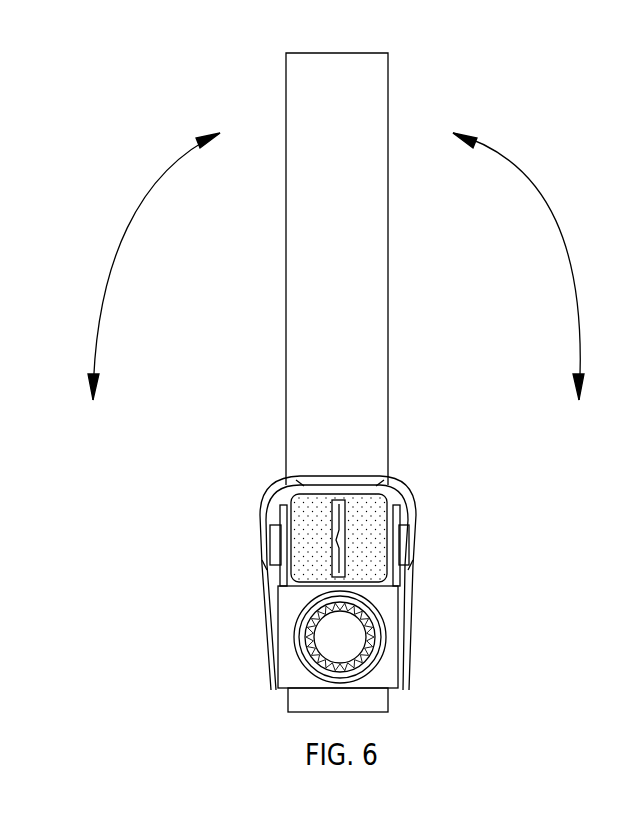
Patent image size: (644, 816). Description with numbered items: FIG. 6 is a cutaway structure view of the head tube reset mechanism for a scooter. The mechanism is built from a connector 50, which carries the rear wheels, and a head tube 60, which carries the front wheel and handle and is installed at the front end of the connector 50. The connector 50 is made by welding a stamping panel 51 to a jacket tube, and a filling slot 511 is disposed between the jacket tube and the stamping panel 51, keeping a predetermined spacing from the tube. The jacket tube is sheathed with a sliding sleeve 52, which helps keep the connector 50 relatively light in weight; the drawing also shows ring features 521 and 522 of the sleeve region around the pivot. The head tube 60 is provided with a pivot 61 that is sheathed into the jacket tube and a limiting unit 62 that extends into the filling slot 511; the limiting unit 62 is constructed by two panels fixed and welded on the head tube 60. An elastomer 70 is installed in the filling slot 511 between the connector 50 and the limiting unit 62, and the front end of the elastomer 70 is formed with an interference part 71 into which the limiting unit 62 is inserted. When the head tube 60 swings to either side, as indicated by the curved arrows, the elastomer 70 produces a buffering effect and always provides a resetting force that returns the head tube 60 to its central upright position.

The connector 50 is at (240, 470).
The stamping panel 51 is at (279, 586).
The filling slot 511 is at (282, 526).
The sliding sleeve 52 is at (376, 622).
The outer ring 521 is at (300, 614).
The rolling balls 522 is at (303, 654).
The head tube 60 is at (358, 313).
The pivot 61 is at (367, 648).
The limiting unit 62 is at (345, 544).
The elastomer 70 is at (368, 512).
The interference part 71 is at (334, 497).